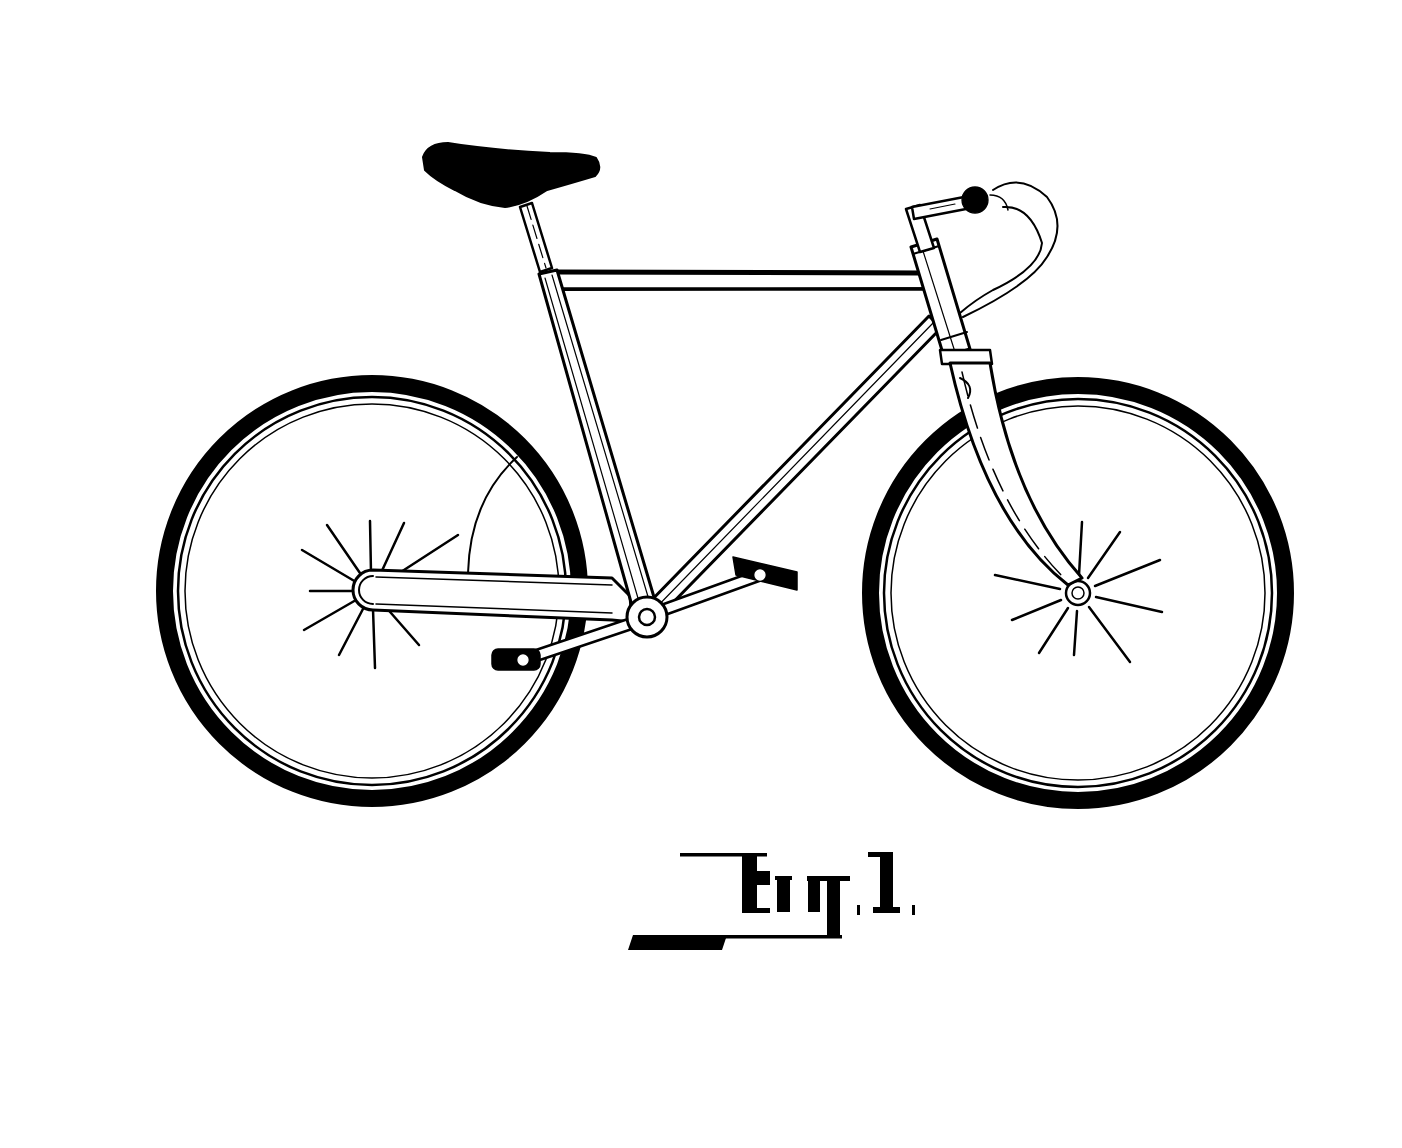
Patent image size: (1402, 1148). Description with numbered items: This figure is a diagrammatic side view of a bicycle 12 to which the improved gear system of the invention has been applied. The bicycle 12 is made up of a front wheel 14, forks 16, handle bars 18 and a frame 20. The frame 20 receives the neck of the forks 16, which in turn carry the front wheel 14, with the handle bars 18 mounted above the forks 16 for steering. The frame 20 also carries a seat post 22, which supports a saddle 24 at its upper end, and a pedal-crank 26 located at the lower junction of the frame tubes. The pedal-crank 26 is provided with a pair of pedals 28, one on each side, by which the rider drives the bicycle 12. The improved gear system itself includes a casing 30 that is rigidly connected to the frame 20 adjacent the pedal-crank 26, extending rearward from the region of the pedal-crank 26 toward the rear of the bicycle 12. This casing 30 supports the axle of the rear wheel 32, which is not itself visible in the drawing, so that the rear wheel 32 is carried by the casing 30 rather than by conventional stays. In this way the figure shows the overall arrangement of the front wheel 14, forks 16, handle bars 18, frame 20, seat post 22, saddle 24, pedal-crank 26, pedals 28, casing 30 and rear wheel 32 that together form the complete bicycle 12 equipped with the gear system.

The bicycle 12 is at (385, 271).
The front wheel 14 is at (1288, 562).
The forks 16 is at (990, 368).
The handle bars 18 is at (925, 203).
The frame 20 is at (752, 262).
The seat post 22 is at (527, 243).
The saddle 24 is at (563, 153).
The pedal-crank 26 is at (660, 630).
The pedals 28 is at (773, 590).
The casing 30 is at (528, 432).
The rear wheel 32 is at (234, 426).